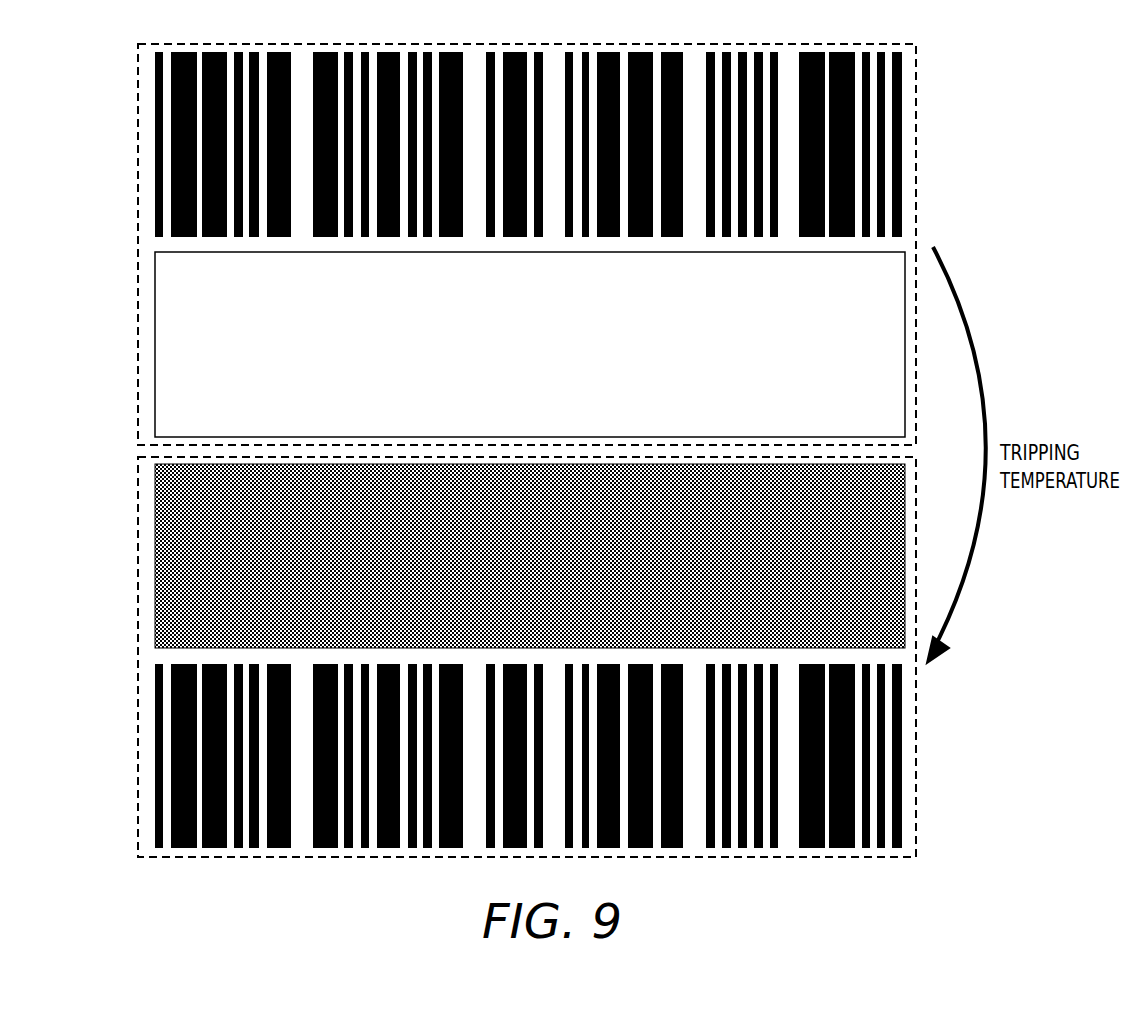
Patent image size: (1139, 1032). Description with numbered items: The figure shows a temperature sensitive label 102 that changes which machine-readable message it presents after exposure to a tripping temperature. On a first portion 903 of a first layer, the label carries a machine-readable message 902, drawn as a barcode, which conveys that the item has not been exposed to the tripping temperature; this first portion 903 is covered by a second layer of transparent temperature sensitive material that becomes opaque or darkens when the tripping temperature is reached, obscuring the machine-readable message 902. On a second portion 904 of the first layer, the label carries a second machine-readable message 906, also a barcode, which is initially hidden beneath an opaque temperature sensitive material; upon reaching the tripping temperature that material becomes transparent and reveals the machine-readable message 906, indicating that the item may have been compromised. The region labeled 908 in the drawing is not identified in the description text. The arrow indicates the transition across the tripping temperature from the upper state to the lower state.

The label 102 is at (918, 162).
The machine-readable message 902 is at (487, 126).
The first portion 903 is at (157, 127).
The second portion 904 is at (155, 373).
The machine-readable message 906 is at (473, 850).
The thermochromic region 908 is at (155, 565).